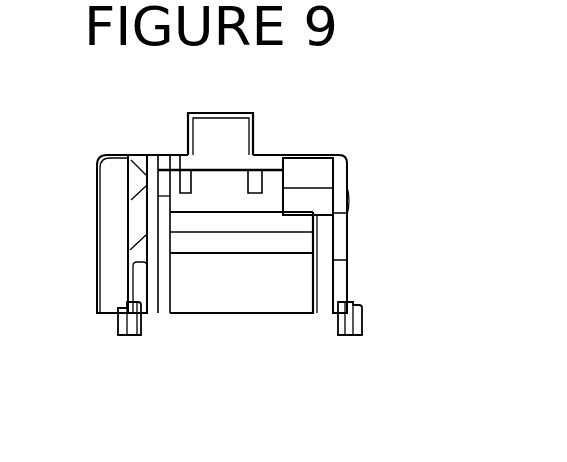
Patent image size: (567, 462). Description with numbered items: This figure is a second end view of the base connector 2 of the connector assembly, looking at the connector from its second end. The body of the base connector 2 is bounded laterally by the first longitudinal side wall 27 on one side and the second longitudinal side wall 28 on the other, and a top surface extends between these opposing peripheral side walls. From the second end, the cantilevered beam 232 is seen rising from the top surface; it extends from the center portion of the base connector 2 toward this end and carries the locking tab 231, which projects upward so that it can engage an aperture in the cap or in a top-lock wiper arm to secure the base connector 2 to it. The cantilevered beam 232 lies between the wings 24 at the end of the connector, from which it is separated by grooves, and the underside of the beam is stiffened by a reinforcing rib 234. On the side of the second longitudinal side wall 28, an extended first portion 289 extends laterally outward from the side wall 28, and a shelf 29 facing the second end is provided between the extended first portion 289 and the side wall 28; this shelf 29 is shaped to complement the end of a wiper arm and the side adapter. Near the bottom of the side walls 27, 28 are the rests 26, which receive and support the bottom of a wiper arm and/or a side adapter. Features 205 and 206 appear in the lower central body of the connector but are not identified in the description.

The base connector 2 is at (162, 128).
The locking tab 231 is at (223, 137).
The wings 24 is at (128, 155).
The first longitudinal side wall 27 is at (348, 252).
The shelf 29 is at (113, 240).
The extended first portion 289 is at (95, 203).
The second longitudinal side wall 28 is at (133, 262).
The cantilevered beam 232 is at (212, 172).
The reinforcing rib 234 is at (185, 178).
The lower body 205 is at (209, 313).
The lower body plate 206 is at (233, 268).
The rests 26 is at (118, 335).